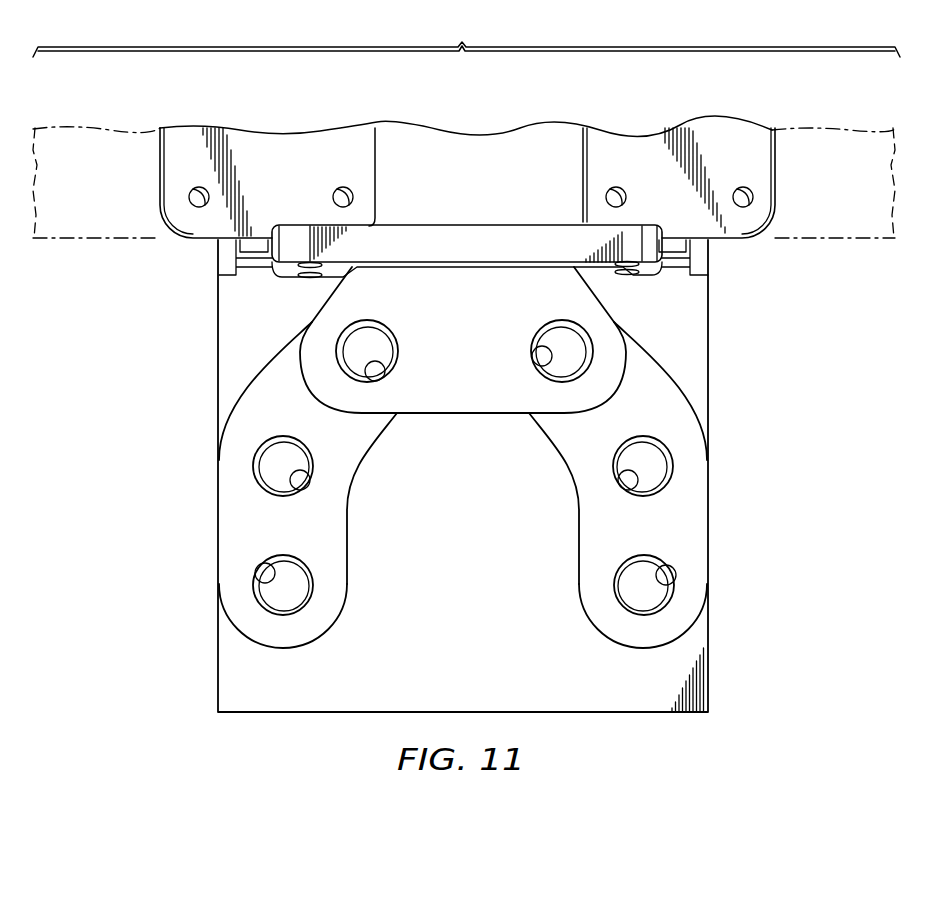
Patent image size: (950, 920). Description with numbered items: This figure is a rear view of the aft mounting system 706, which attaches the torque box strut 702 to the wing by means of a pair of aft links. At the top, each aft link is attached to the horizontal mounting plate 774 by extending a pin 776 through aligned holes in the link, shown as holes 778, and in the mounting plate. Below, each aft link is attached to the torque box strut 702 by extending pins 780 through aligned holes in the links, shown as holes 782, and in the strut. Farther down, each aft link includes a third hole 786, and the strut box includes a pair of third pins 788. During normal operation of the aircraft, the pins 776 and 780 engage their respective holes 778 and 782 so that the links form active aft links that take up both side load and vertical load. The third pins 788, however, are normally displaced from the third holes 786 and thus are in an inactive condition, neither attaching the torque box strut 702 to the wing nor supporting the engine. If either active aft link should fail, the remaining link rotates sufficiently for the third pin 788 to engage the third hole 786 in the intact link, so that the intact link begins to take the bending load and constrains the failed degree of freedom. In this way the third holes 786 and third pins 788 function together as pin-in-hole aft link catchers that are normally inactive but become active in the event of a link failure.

The aft mounting system 706 is at (466, 32).
The horizontal mounting plate 774 is at (296, 142).
The torque box strut 702 is at (617, 695).
The pin 776 is at (350, 320).
The holes 778 is at (383, 370).
The pins 780 is at (270, 468).
The holes 782 is at (315, 468).
The third hole 786 is at (265, 568).
The third pins 788 is at (292, 584).